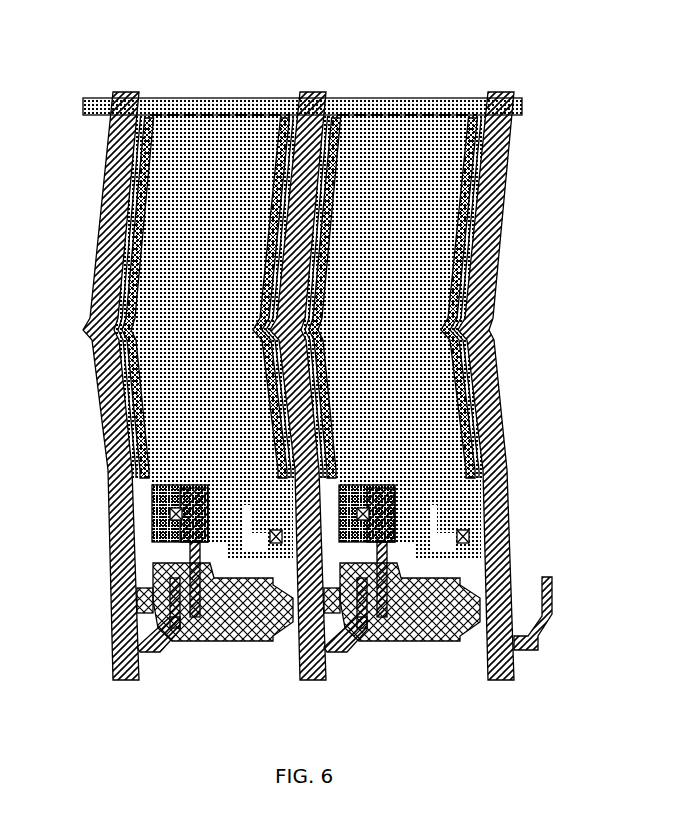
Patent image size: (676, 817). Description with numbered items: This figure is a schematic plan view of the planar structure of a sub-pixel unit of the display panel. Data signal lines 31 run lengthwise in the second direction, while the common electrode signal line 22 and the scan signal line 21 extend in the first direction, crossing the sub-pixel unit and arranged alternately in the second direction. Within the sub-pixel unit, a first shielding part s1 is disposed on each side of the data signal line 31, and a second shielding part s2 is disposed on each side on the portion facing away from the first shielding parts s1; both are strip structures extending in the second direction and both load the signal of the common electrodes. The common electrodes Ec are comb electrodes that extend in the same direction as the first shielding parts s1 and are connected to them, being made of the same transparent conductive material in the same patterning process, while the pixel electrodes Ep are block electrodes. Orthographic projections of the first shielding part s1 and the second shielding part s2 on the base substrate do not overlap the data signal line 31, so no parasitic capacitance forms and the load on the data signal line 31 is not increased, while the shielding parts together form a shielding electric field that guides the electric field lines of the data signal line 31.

The data signal line 31 is at (125, 92).
The common electrode signal line 22 is at (388, 98).
The scan signal line 21 is at (413, 625).
The first shielding part s1 is at (270, 298).
The second shielding part s2 is at (262, 405).
The common electrode Ec is at (427, 433).
The pixel electrode Ep is at (442, 457).